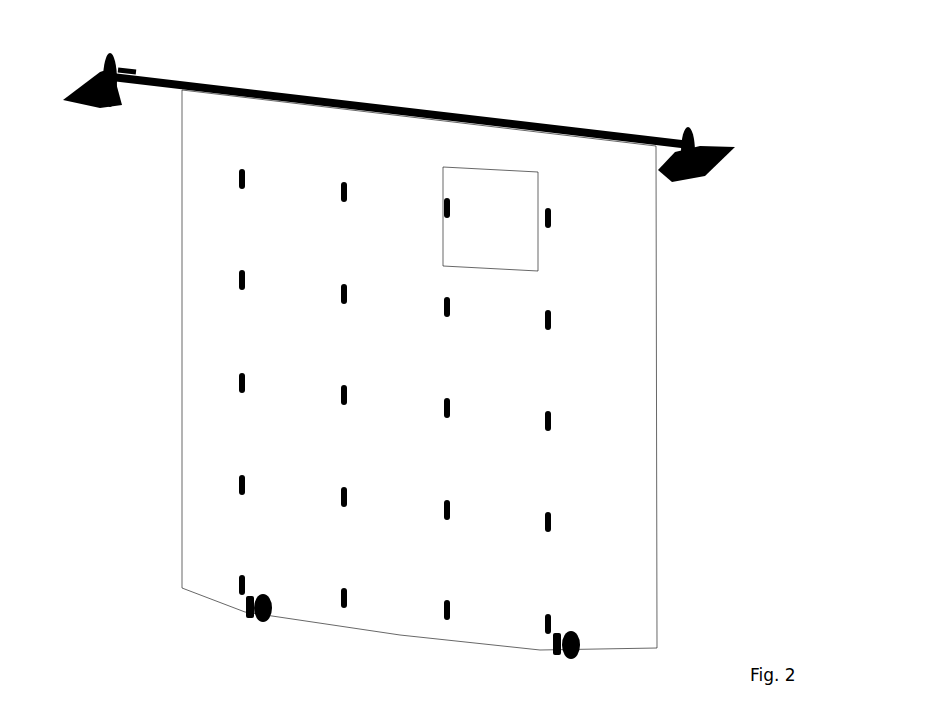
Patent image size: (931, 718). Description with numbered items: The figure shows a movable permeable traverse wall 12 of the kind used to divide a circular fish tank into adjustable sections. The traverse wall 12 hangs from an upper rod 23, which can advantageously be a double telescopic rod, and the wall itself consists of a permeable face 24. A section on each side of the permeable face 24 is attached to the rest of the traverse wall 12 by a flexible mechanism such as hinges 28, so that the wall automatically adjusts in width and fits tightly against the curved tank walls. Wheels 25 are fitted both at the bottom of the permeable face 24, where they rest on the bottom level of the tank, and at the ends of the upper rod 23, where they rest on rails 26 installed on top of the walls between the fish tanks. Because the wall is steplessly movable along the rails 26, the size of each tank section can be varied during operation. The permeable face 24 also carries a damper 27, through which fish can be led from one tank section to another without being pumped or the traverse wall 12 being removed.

The movable permeable traverse wall 12 is at (620, 56).
The upper rod 23 is at (433, 110).
The permeable face 24 is at (262, 316).
The wheels 25 is at (580, 630).
The rails 26 is at (712, 160).
The damper 27 is at (480, 209).
The hinges 28 is at (233, 383).